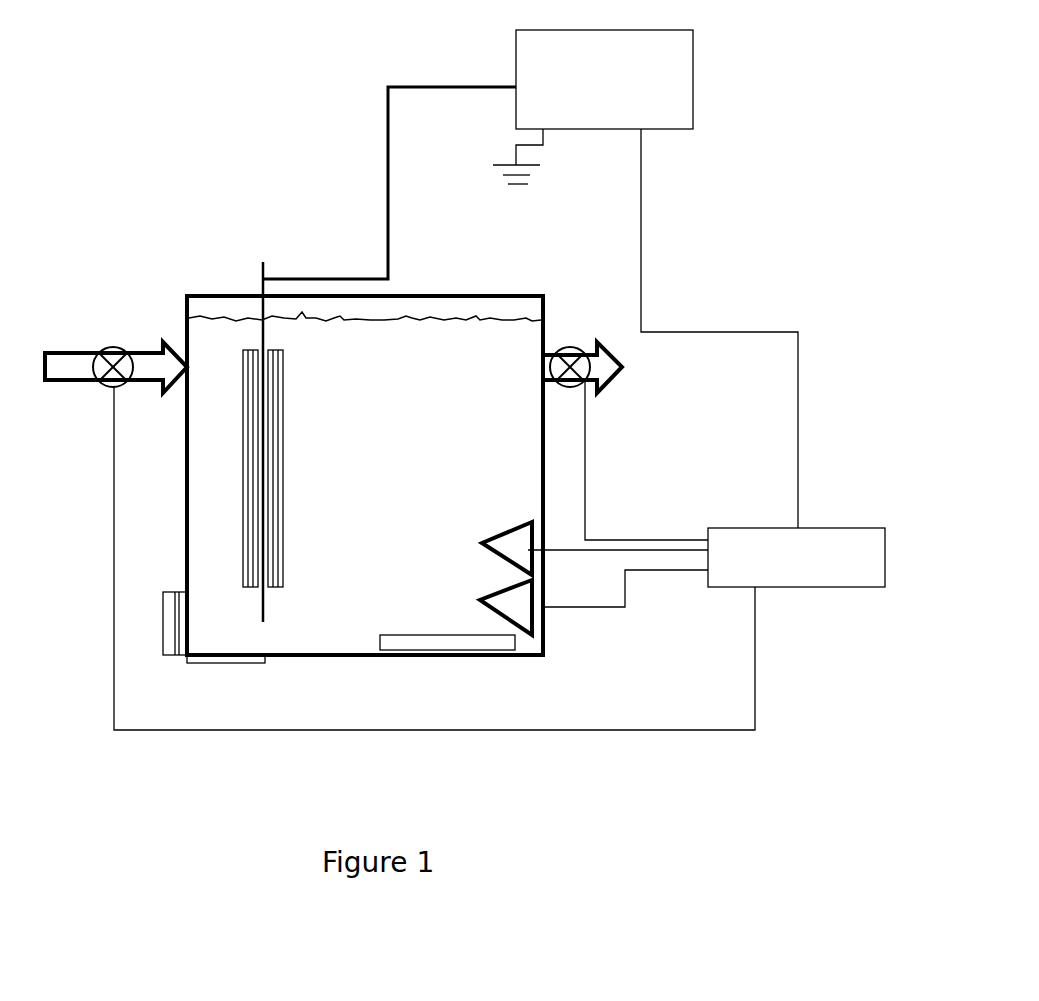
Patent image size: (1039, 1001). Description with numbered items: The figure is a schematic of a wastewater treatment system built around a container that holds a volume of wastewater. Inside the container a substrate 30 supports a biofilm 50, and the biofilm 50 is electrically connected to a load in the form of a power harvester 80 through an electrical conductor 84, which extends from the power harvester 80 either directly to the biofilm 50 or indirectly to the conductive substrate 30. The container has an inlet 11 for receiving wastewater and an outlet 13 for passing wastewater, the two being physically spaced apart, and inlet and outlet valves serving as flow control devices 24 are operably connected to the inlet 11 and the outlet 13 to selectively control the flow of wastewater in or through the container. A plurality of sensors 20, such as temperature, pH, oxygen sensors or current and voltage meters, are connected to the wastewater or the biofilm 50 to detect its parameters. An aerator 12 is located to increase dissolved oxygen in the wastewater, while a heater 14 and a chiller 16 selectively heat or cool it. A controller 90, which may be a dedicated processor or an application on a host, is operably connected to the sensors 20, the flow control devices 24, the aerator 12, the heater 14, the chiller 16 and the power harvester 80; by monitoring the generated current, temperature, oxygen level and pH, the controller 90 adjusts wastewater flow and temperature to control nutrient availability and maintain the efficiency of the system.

The inlet 11 is at (188, 365).
The aerator 12 is at (470, 640).
The outlet 13 is at (538, 364).
The heater 14 is at (223, 660).
The chiller 16 is at (170, 638).
The sensors 20 is at (508, 526).
The flow control devices 24 is at (115, 343).
The substrate 30 is at (263, 598).
The biofilm 50 is at (280, 373).
The power harvester 80 is at (693, 82).
The electrical conductor 84 is at (387, 128).
The controller 90 is at (807, 587).